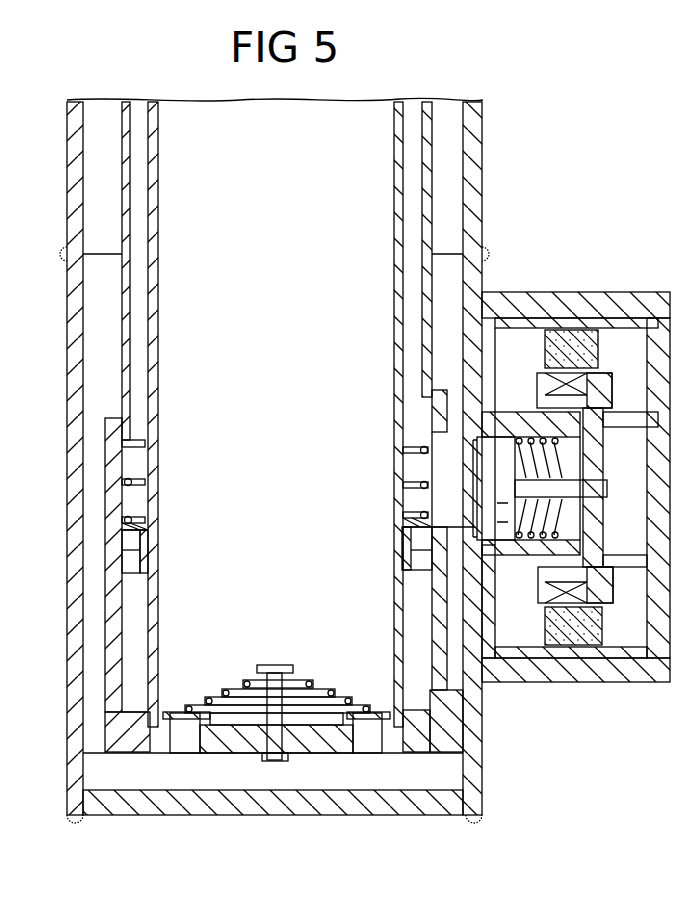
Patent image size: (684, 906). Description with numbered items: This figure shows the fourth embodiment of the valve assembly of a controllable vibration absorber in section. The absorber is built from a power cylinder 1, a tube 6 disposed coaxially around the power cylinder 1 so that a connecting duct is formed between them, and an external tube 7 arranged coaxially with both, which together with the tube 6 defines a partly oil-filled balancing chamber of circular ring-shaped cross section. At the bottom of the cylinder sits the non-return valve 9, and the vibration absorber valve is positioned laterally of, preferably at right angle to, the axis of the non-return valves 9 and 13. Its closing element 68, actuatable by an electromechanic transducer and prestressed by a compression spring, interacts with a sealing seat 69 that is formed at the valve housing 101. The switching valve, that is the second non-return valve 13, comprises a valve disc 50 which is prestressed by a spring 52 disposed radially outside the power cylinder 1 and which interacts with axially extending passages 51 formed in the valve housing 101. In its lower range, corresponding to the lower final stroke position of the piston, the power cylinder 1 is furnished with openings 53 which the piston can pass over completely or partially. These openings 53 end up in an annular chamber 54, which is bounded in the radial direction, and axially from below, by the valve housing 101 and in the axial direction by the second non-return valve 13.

The power cylinder 1 is at (397, 102).
The tube 6 is at (426, 102).
The external tube 7 is at (470, 104).
The non-return valve 9 is at (178, 695).
The second non-return valve 13 is at (390, 537).
The valve disc 50 is at (130, 528).
The axially extending passages 51 is at (128, 557).
The spring 52 is at (133, 482).
The openings 53 is at (158, 680).
The annular chamber 54 is at (420, 695).
The closing element 68 is at (498, 450).
The sealing seat 69 is at (475, 434).
The valve housing 101 is at (585, 305).